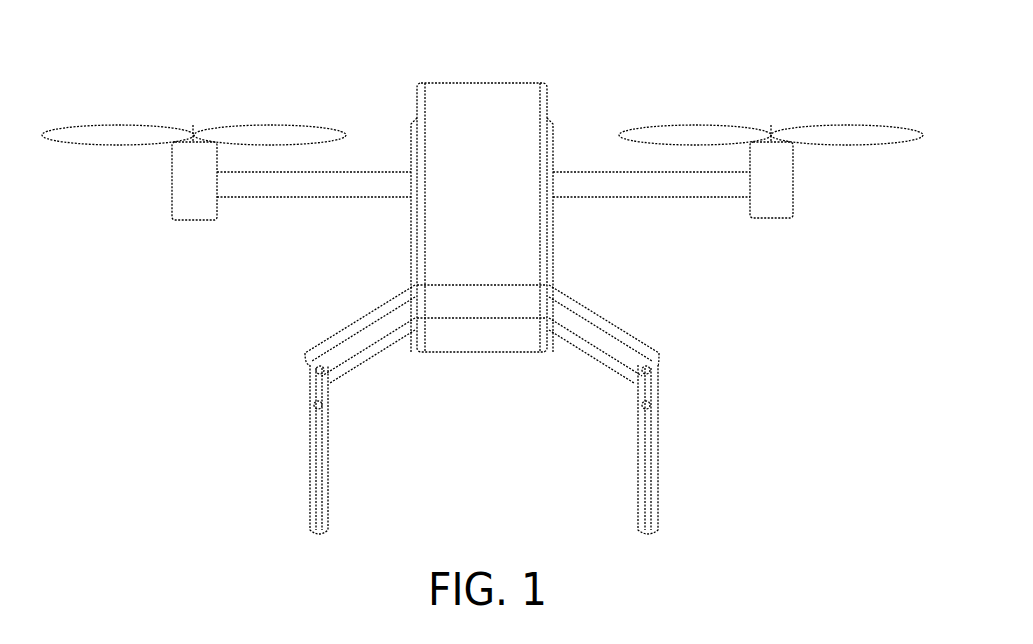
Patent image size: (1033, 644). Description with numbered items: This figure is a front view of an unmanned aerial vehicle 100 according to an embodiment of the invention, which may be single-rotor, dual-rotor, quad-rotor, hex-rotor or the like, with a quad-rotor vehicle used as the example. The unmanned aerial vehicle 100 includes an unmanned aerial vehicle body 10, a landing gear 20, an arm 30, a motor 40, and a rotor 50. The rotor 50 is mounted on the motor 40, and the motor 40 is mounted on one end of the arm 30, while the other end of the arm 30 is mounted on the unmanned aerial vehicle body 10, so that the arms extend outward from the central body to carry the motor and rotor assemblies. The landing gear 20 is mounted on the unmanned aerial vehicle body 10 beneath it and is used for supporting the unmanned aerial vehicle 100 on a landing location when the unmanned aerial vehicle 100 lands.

The unmanned aerial vehicle 100 is at (692, 72).
The unmanned aerial vehicle body 10 is at (473, 98).
The landing gear 20 is at (655, 340).
The arm 30 is at (665, 195).
The motor 40 is at (773, 193).
The rotor 50 is at (822, 128).